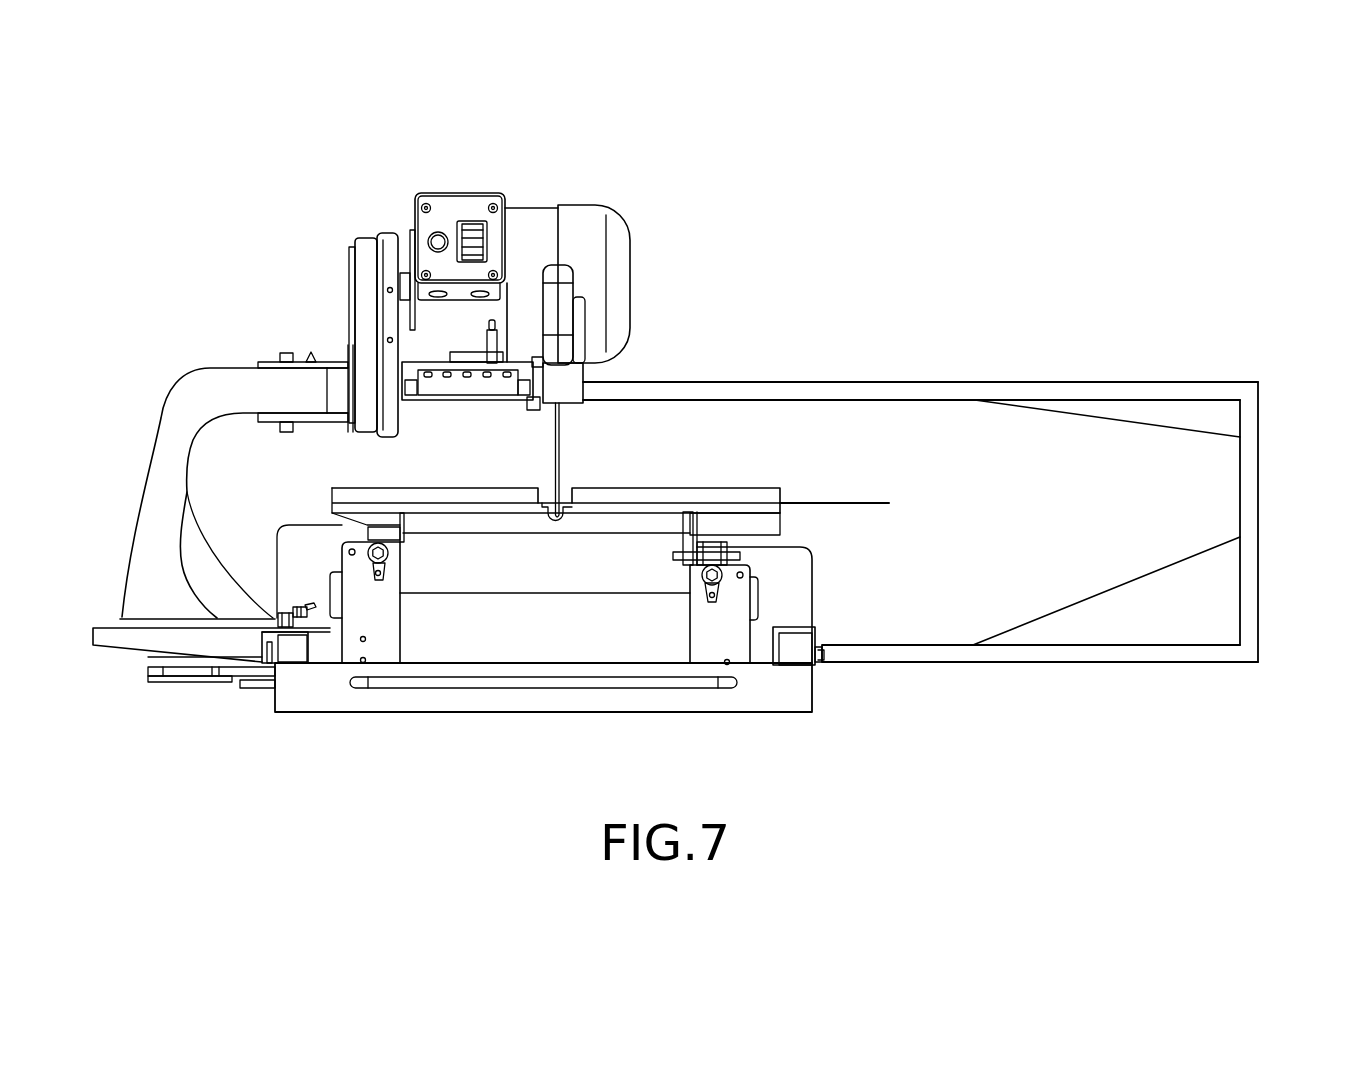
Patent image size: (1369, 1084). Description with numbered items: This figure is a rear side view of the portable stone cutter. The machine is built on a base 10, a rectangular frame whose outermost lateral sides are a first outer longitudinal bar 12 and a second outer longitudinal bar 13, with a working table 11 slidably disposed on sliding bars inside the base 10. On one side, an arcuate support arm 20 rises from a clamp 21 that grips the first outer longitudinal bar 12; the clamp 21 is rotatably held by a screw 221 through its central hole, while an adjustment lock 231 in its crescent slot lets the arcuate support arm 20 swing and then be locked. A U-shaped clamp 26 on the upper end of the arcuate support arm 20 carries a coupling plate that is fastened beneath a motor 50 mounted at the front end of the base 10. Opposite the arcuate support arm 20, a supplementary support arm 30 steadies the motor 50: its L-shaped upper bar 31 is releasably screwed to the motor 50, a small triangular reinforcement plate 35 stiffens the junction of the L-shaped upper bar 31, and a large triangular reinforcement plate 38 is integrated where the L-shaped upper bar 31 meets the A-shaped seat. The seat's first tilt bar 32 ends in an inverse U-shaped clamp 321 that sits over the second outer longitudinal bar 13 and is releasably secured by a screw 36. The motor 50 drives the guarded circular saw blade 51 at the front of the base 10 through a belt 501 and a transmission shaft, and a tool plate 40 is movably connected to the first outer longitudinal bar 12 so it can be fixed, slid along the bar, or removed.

The base 10 is at (410, 725).
The working table 11 is at (712, 495).
The first outer longitudinal bar 12 is at (288, 651).
The second outer longitudinal bar 13 is at (800, 650).
The arcuate support arm 20 is at (160, 428).
The clamp 21 is at (150, 678).
The U-shaped clamp 26 is at (335, 368).
The supplementary support arm 30 is at (967, 523).
The L-shaped upper bar 31 is at (990, 385).
The first tilt bar 32 is at (1050, 664).
The small triangular reinforcement plate 35 is at (1150, 418).
The screw 36 is at (822, 656).
The large triangular reinforcement plate 38 is at (1183, 632).
The tool plate 40 is at (120, 640).
The motor 50 is at (535, 210).
The guarded circular saw blade 51 is at (560, 445).
The belt 501 is at (365, 243).
The screw 221 is at (280, 613).
The adjustment lock 231 is at (303, 606).
The inverse U-shaped clamp 321 is at (792, 627).